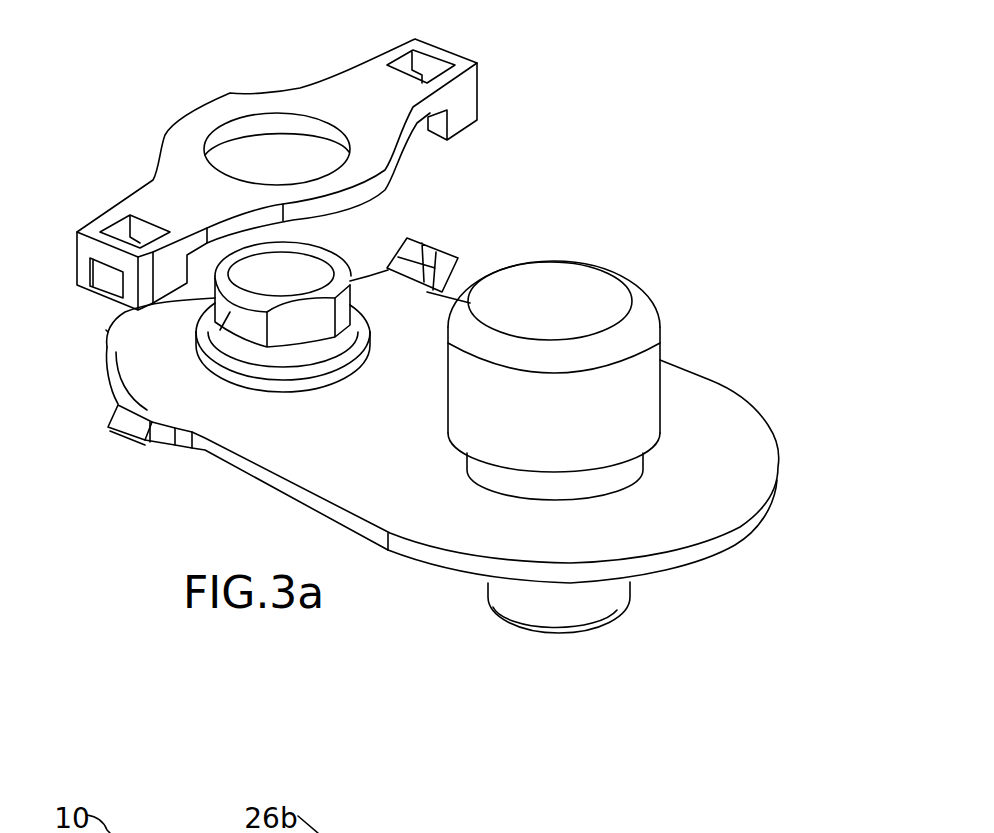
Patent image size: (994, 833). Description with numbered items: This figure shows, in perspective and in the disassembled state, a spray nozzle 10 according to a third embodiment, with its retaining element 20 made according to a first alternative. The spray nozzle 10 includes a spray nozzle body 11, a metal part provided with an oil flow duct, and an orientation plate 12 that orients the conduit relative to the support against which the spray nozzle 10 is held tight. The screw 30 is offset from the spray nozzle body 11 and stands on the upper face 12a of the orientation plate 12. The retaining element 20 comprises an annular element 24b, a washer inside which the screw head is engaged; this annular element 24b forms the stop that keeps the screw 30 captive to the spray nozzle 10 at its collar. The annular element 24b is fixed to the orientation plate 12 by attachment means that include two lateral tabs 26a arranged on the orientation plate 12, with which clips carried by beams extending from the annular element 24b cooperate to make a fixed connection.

The spray nozzle 10 is at (92, 133).
The spray nozzle body 11 is at (597, 287).
The orientation plate 12 is at (583, 535).
The upper face 12a is at (707, 403).
The retaining element 20 is at (355, 75).
The annular element 24b is at (205, 122).
The lateral tabs 26a is at (432, 245).
The screw 30 is at (215, 338).